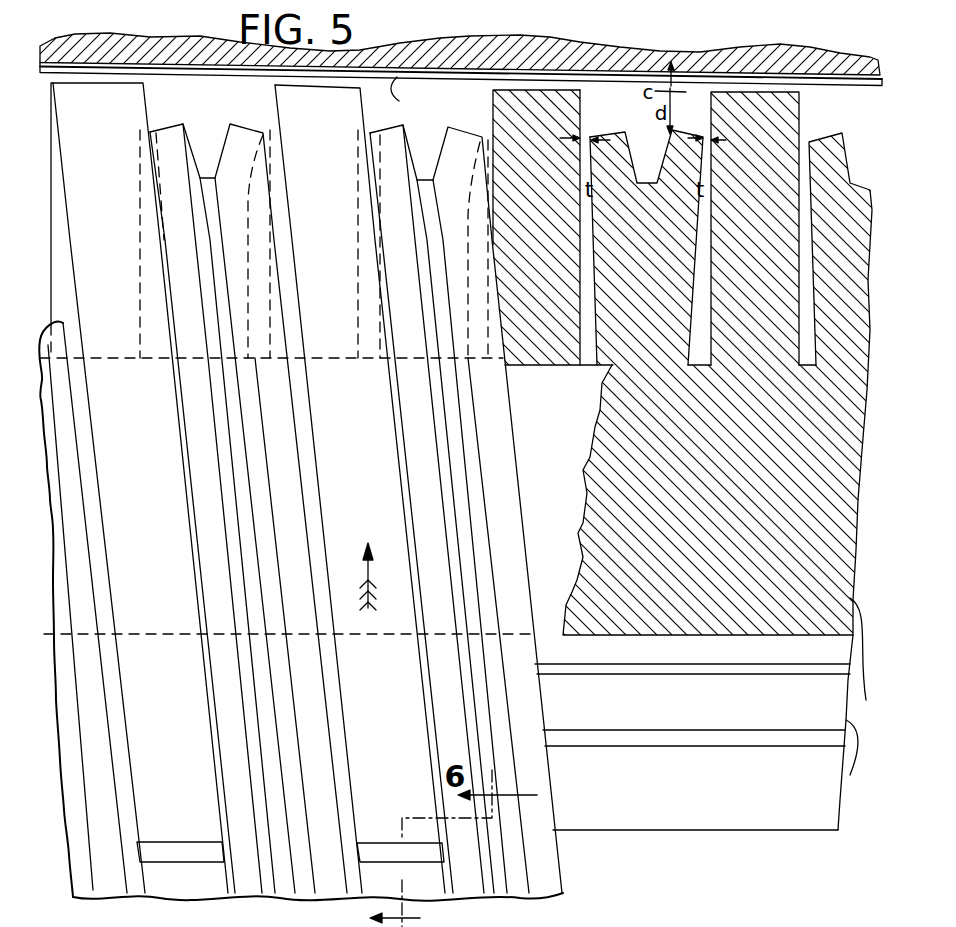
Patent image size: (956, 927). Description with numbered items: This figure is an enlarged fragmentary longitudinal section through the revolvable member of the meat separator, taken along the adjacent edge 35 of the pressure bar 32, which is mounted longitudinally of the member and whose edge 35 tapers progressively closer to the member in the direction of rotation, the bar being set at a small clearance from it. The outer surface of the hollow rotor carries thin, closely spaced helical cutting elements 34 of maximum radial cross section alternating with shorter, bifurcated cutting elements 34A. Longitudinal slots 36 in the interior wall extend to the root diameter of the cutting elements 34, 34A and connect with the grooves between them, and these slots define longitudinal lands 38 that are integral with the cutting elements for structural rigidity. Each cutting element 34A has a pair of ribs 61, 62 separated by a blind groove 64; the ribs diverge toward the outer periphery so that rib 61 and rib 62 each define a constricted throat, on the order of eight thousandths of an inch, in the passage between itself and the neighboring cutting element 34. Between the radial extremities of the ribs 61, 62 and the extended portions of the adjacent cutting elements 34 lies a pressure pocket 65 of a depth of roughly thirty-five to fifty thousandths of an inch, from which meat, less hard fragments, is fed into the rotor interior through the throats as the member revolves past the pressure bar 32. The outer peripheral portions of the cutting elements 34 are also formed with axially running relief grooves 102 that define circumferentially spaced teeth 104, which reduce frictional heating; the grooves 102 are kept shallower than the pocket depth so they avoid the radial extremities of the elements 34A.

The pressure bar 32 is at (622, 58).
The cutting elements 34 is at (293, 103).
The cutting elements 34A is at (617, 335).
The adjacent edge 35 is at (416, 96).
The longitudinal slots 36 is at (617, 692).
The longitudinal lands 38 is at (709, 714).
The rib 61 is at (391, 142).
The rib 62 is at (464, 140).
The blind groove 64 is at (424, 180).
The pressure pocket 65 is at (190, 83).
The relief grooves 102 is at (165, 852).
The teeth 104 is at (388, 432).